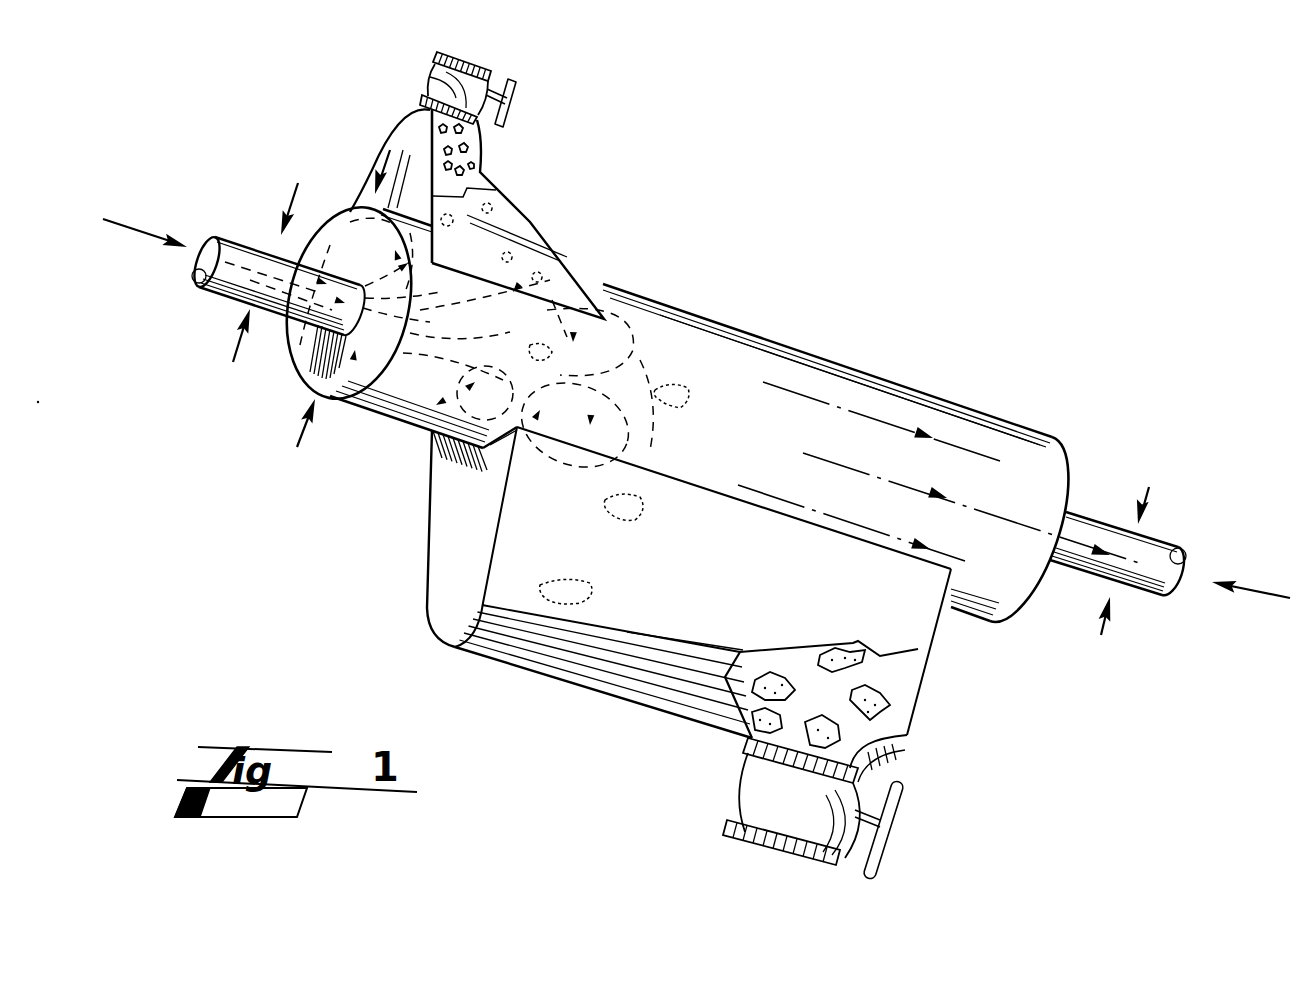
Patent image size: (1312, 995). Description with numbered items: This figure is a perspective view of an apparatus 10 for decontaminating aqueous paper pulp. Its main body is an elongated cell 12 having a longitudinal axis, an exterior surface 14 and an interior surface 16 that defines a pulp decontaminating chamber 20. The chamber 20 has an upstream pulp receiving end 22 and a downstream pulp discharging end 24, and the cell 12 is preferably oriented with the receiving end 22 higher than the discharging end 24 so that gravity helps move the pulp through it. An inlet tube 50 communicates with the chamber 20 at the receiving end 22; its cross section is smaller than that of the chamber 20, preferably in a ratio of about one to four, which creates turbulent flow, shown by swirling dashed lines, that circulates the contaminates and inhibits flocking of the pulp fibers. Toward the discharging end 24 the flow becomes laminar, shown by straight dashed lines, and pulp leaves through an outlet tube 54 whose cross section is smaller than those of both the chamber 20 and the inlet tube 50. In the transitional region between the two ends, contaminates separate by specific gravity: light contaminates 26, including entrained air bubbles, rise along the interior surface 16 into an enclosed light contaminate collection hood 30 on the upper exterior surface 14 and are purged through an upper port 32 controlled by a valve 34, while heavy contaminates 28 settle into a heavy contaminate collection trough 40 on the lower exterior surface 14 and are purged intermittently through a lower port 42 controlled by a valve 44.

The apparatus 10 is at (713, 134).
The cell 12 is at (719, 281).
The exterior surface 14 is at (1008, 473).
The interior surface 16 is at (946, 417).
The pulp decontaminating chamber 20 is at (793, 348).
The upstream pulp receiving end 22 is at (302, 372).
The downstream pulp discharging end 24 is at (1058, 444).
The light contaminates 26 is at (463, 150).
The heavy contaminates 28 is at (545, 612).
The light contaminate collection hood 30 is at (533, 220).
The upper port 32 is at (430, 86).
The valve 34 is at (482, 64).
The heavy contaminate collection trough 40 is at (928, 648).
The lower port 42 is at (905, 745).
The valve 44 is at (760, 802).
The inlet tube 50 is at (222, 237).
The outlet tube 54 is at (1103, 523).